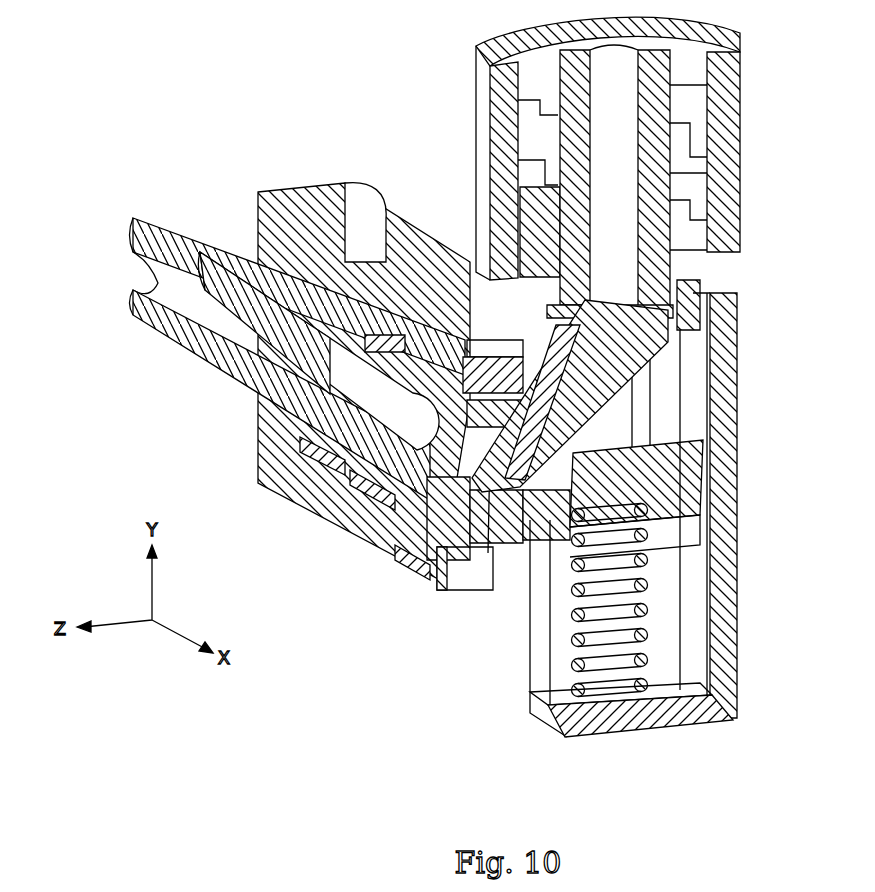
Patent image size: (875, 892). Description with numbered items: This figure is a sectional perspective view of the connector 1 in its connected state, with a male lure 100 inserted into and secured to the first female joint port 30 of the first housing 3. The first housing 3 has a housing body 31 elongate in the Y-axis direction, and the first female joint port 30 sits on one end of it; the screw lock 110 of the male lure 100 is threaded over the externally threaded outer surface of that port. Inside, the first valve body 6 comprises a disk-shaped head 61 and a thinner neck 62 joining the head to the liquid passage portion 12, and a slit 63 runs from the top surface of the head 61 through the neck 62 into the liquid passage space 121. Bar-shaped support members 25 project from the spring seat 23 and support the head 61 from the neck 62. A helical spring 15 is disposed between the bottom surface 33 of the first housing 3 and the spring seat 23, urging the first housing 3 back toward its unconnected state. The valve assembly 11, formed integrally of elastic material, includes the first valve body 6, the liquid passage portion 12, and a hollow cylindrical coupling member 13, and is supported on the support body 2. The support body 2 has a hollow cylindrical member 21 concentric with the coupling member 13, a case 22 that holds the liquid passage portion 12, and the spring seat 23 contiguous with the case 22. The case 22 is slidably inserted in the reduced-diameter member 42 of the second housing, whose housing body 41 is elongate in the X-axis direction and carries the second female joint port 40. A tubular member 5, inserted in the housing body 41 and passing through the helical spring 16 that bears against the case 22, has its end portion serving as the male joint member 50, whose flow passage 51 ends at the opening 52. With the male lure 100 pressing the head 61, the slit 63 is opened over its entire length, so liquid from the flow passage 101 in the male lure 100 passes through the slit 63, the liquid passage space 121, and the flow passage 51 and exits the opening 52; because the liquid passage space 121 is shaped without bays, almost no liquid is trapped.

The connector 1 is at (190, 127).
The second female joint port 40 is at (364, 336).
The housing body 41 is at (355, 235).
The male joint member 50 is at (259, 321).
The flow passage 51 is at (180, 330).
The opening 52 is at (158, 283).
The tubular member 5 is at (224, 378).
The coupling member 13 is at (378, 348).
The helical spring 16 is at (318, 456).
The hollow cylindrical member 21 is at (362, 483).
The case 22 is at (405, 560).
The reduced-diameter member 42 is at (443, 590).
The liquid passage space 121 is at (480, 545).
The valve assembly 11 is at (523, 540).
The helical spring 15 is at (555, 665).
The bottom surface 33 is at (573, 705).
The male lure 100 is at (654, 165).
The flow passage 101 is at (720, 120).
The screw lock 110 is at (740, 145).
The first female joint port 30 is at (740, 190).
The first valve body 6 is at (698, 309).
The head 61 is at (610, 311).
The support members 25 is at (737, 375).
The slit 63 is at (705, 410).
The neck 62 is at (737, 450).
The spring seat 23 is at (737, 485).
The support body 2 is at (661, 427).
The liquid passage portion 12 is at (707, 507).
The housing body 31 is at (737, 648).
The first housing 3 is at (643, 522).